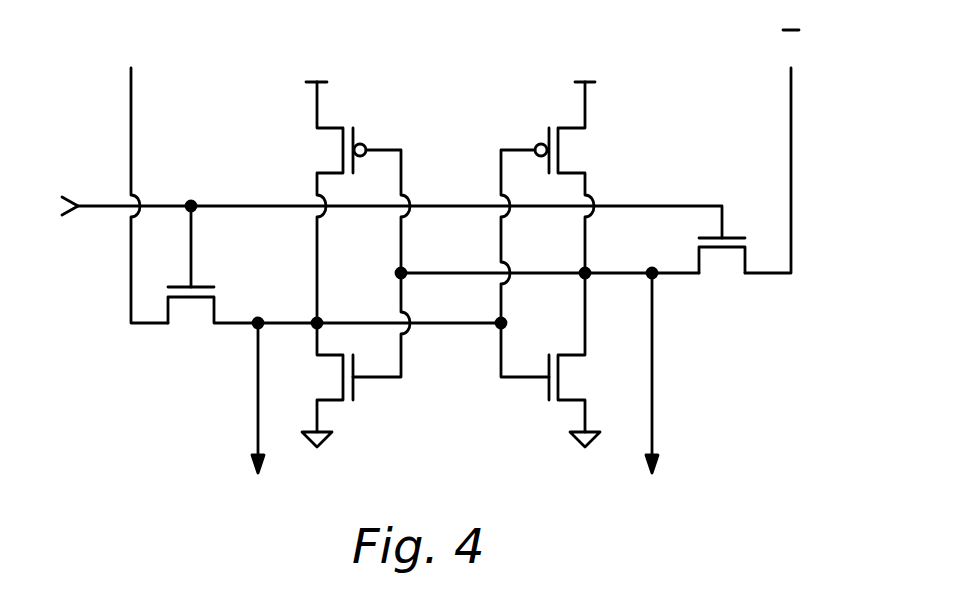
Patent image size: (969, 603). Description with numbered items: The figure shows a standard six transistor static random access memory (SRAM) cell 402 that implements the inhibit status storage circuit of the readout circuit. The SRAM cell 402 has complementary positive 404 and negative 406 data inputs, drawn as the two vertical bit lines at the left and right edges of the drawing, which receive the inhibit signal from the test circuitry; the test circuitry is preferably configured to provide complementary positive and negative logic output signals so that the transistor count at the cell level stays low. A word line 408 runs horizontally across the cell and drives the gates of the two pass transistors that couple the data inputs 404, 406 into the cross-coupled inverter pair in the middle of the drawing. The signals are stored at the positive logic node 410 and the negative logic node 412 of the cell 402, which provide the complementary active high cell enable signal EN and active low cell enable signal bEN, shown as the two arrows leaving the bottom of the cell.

The six transistor static random access memory (SRAM) cell 402 is at (449, 255).
The positive data input 404 is at (128, 105).
The negative data input 406 is at (792, 146).
The word line WL 408 is at (100, 208).
The positive logic node 410 is at (245, 335).
The negative logic node 412 is at (665, 285).